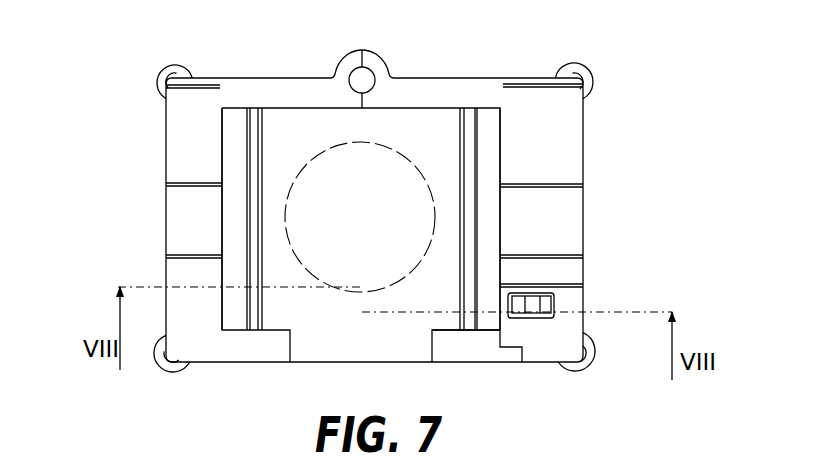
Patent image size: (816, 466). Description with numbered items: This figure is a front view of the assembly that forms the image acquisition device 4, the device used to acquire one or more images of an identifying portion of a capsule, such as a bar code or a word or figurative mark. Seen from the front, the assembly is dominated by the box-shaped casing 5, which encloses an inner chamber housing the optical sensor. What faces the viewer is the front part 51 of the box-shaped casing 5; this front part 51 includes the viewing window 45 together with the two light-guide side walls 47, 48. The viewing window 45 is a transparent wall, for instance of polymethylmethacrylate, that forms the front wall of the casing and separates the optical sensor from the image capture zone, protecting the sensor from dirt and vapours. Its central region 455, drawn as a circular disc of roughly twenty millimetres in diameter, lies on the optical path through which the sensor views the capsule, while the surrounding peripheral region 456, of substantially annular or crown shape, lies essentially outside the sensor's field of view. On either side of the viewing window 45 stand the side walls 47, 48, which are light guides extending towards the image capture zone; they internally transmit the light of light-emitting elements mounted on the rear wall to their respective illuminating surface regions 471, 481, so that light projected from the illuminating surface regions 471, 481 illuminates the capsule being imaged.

The image acquisition device 4 is at (87, 128).
The box-shaped casing 5 is at (591, 125).
The front part 51 is at (578, 153).
The viewing window 45 is at (432, 293).
The side wall 47 is at (228, 216).
The side wall 48 is at (502, 214).
The illuminating surface region 471 is at (258, 167).
The illuminating surface region 481 is at (467, 150).
The central region 455 is at (317, 232).
The peripheral region 456 is at (443, 258).